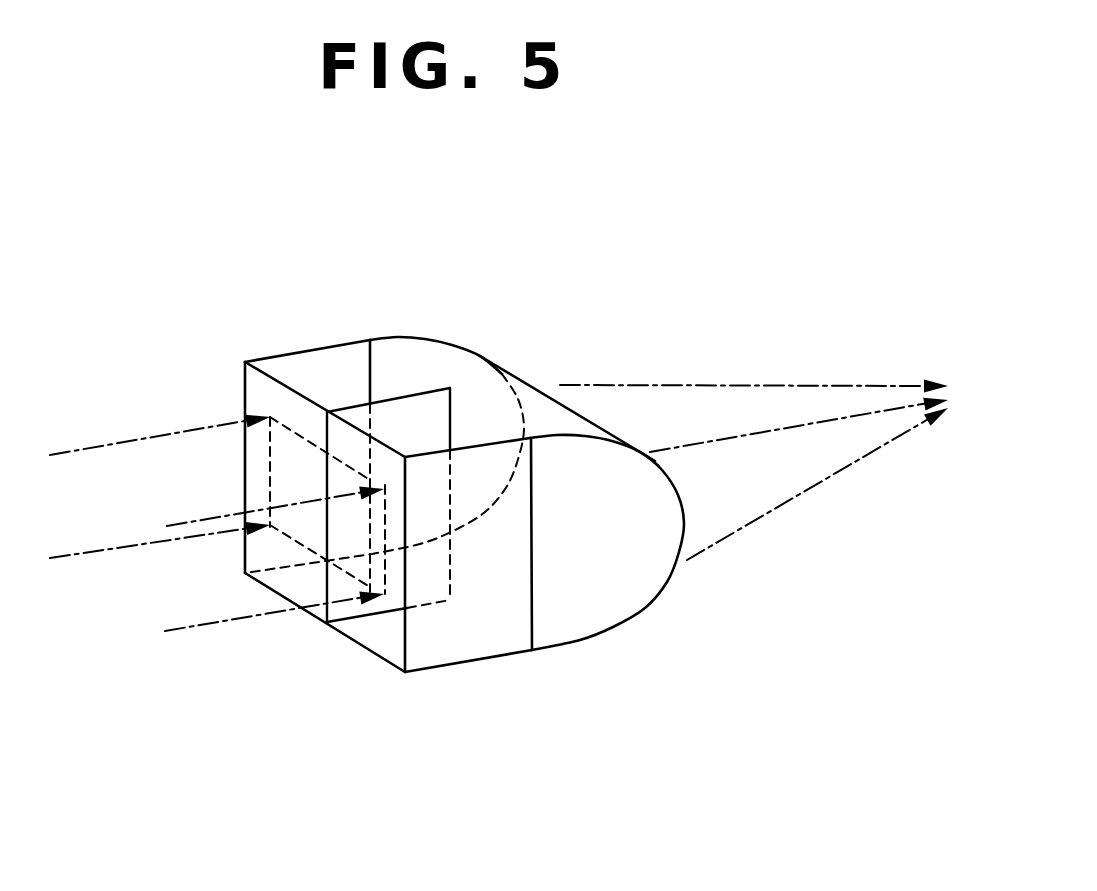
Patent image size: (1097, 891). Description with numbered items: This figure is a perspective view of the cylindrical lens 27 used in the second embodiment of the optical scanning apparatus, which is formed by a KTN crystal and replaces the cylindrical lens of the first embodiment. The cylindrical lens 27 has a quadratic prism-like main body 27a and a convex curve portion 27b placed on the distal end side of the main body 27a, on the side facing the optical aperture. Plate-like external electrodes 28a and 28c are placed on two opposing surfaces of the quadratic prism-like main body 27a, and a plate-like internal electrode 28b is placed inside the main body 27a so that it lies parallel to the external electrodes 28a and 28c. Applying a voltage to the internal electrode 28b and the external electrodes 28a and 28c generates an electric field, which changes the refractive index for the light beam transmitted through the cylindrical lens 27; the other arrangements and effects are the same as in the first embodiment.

The cylindrical lens 27 is at (433, 297).
The main body 27a is at (300, 350).
The convex curve portion 27b is at (527, 386).
The external electrode 28a is at (262, 552).
The internal electrode 28b is at (348, 607).
The external electrode 28c is at (460, 647).